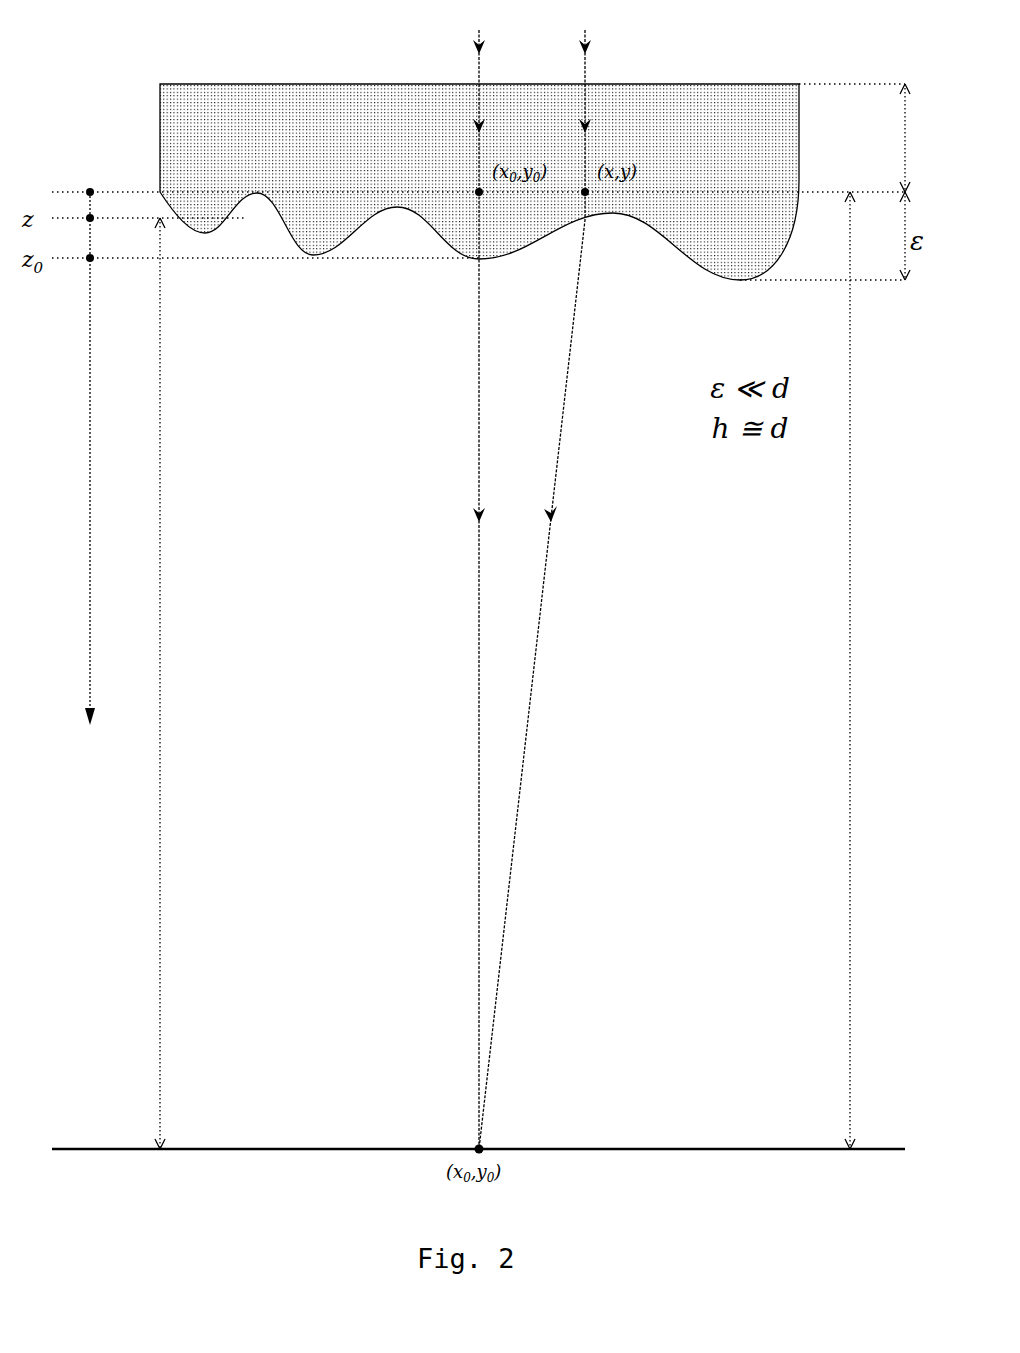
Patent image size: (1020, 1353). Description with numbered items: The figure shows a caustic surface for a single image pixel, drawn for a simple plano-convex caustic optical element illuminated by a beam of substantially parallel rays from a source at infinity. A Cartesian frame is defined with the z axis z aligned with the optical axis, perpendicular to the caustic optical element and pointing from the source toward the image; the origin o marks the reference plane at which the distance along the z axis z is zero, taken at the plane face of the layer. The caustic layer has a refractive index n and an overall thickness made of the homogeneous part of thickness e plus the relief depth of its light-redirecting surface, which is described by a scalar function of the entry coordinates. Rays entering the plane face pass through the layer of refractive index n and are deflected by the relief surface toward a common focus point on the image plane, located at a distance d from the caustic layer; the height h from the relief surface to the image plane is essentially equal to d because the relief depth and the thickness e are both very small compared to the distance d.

The refractive index n is at (479, 182).
The origin of the z axis o is at (478, 177).
The z axis z is at (99, 462).
The height of the surface above the focal plane h is at (170, 683).
The distance between the caustic layer and the image plane d is at (859, 670).
The thickness of the homogeneous part of the caustic layer e is at (912, 138).